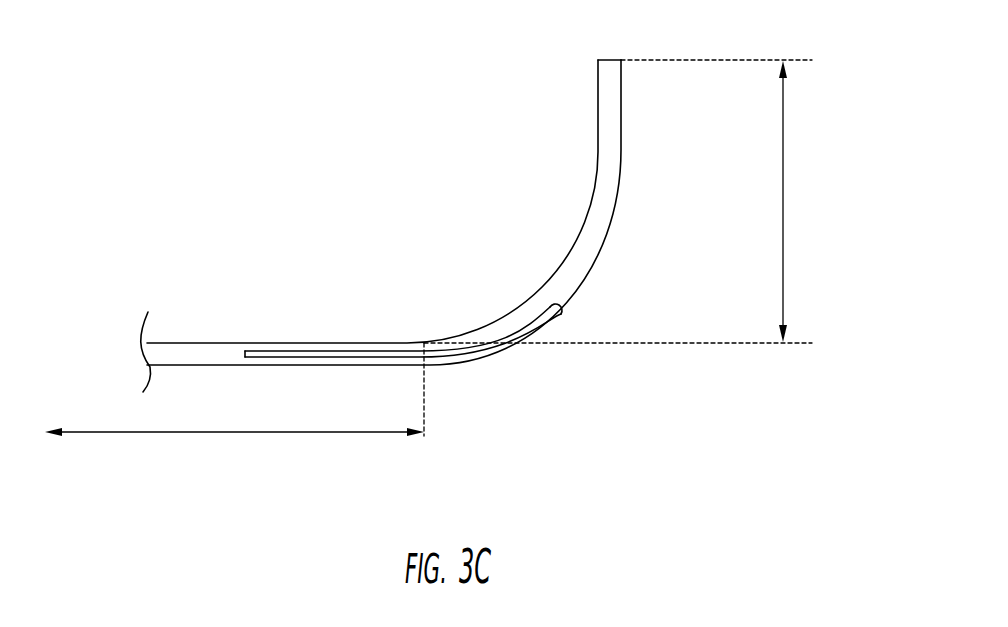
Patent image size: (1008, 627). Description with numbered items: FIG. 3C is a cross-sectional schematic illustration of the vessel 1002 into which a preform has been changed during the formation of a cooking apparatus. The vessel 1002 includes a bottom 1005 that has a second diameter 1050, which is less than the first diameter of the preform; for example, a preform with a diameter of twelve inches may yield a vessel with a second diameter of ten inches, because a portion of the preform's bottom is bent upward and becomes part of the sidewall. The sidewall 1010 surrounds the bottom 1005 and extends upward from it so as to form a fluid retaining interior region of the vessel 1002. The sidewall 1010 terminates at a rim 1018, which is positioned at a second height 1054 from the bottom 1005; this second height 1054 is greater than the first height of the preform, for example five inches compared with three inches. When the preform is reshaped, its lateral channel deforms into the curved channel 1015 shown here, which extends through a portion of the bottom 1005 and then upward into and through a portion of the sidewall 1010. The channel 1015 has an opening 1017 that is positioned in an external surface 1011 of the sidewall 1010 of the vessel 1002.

The vessel 1002 is at (417, 212).
The bottom 1005 is at (218, 365).
The sidewall 1010 is at (615, 193).
The external surface 1011 is at (571, 304).
The channel 1015 is at (368, 358).
The opening 1017 is at (562, 312).
The rim 1018 is at (606, 60).
The second diameter 1050 is at (247, 433).
The second height 1054 is at (633, 201).